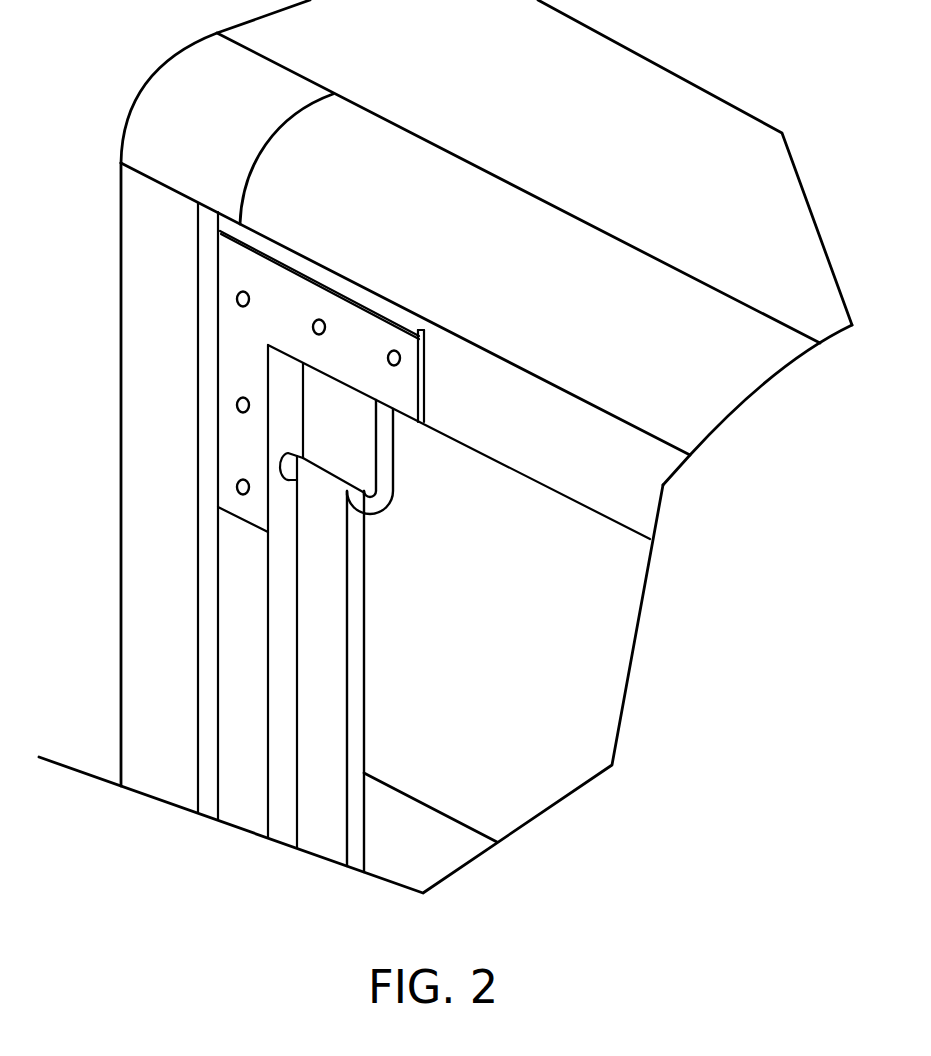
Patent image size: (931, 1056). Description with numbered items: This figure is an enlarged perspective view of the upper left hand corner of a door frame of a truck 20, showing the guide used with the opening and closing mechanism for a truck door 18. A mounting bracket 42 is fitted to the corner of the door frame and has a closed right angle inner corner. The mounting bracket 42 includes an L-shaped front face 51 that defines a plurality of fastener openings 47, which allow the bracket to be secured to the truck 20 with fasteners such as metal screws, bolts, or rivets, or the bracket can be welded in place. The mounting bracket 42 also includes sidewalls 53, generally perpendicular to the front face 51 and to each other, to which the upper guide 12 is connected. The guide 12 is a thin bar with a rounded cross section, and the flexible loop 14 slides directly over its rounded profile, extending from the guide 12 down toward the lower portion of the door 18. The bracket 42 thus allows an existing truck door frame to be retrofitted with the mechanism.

The upper guide 12 is at (387, 473).
The flexible loop 14 is at (350, 665).
The truck door 18 is at (582, 666).
The truck 20 is at (676, 385).
The mounting bracket 42 is at (428, 374).
The openings 47 is at (320, 320).
The front face 51 is at (248, 332).
The sidewalls 53 is at (288, 407).